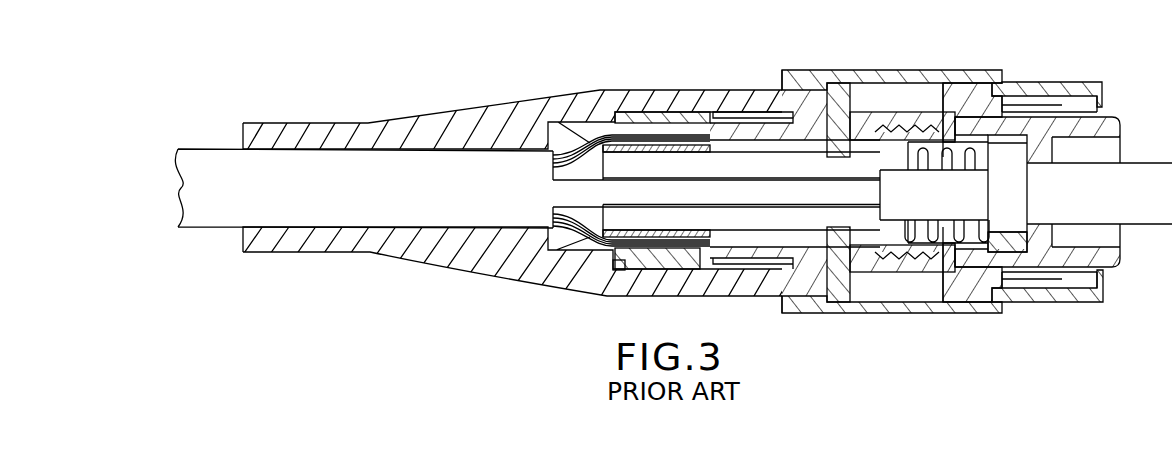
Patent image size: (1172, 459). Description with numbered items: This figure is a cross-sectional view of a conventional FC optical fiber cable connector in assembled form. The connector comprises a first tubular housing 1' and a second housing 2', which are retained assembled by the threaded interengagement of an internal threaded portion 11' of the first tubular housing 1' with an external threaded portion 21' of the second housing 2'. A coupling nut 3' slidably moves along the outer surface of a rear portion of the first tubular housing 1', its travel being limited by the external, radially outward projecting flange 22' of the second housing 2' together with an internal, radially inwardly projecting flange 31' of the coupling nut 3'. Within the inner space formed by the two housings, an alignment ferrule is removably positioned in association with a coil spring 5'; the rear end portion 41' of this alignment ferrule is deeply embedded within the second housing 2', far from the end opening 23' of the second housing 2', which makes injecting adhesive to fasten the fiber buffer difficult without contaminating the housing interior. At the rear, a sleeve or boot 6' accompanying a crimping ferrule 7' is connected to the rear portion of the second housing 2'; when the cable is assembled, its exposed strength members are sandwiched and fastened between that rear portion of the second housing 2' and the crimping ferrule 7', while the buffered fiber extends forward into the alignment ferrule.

The first tubular housing 1' is at (1063, 175).
The second housing 2' is at (780, 179).
The coupling nut 3' is at (1047, 174).
The coil spring 5' is at (957, 140).
The sleeve or boot 6' is at (515, 184).
The crimping ferrule 7' is at (661, 158).
The internal threaded portion 11' is at (886, 235).
The external threaded portion 21' is at (902, 214).
The external radially outward projecting flange 22' is at (892, 177).
The end opening 23' is at (716, 191).
The internal radially inwardly projecting flange 31' is at (958, 217).
The rear end portion of the alignment ferrule 41' is at (939, 193).